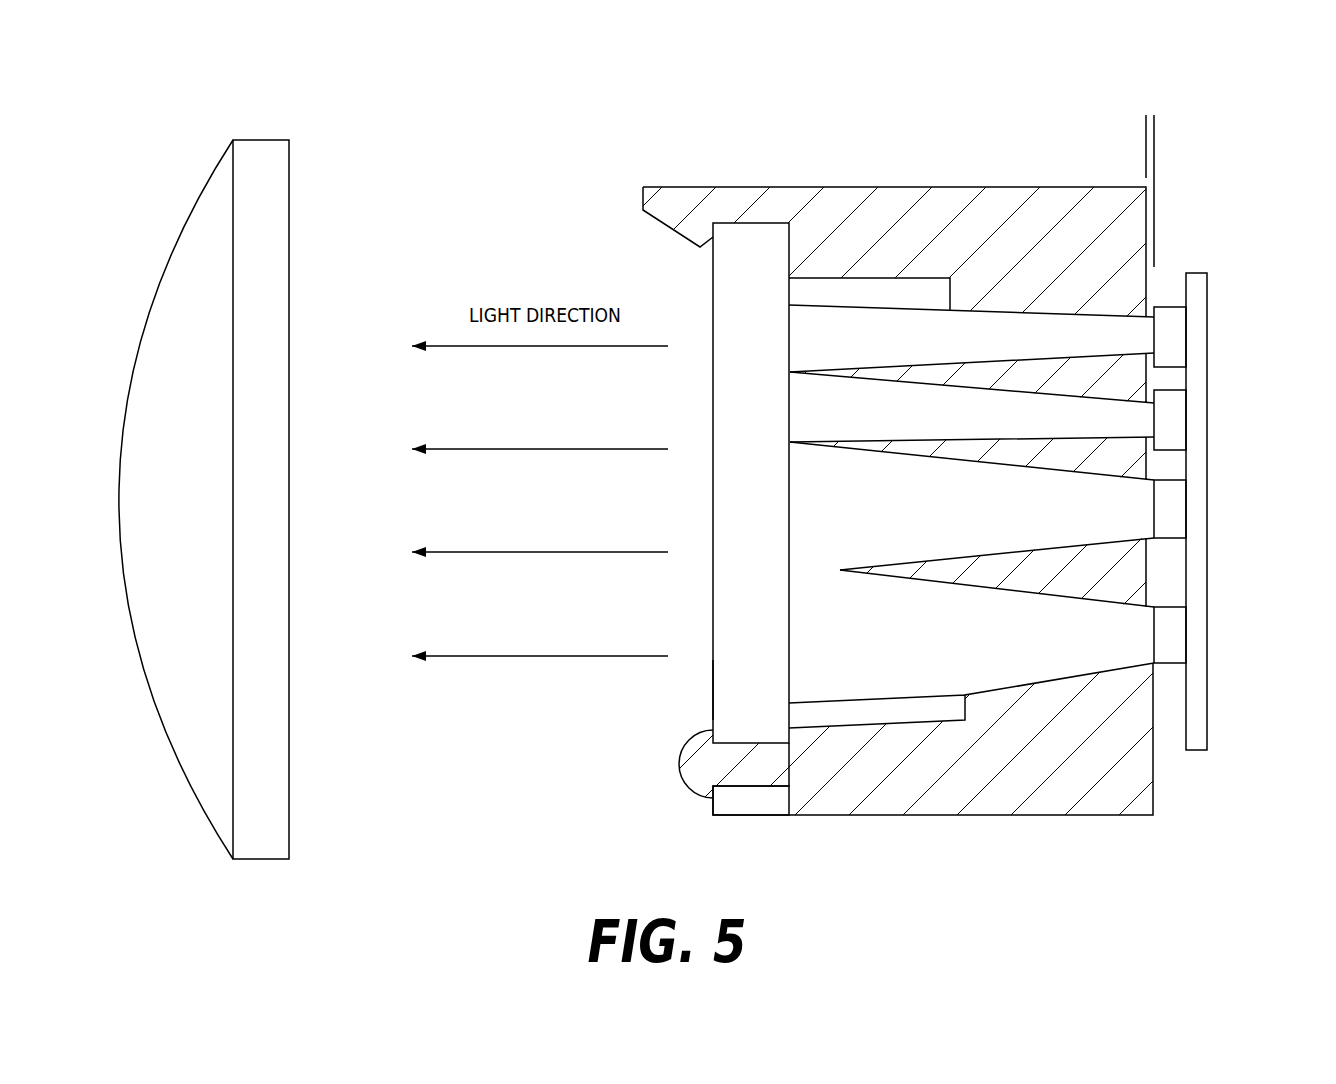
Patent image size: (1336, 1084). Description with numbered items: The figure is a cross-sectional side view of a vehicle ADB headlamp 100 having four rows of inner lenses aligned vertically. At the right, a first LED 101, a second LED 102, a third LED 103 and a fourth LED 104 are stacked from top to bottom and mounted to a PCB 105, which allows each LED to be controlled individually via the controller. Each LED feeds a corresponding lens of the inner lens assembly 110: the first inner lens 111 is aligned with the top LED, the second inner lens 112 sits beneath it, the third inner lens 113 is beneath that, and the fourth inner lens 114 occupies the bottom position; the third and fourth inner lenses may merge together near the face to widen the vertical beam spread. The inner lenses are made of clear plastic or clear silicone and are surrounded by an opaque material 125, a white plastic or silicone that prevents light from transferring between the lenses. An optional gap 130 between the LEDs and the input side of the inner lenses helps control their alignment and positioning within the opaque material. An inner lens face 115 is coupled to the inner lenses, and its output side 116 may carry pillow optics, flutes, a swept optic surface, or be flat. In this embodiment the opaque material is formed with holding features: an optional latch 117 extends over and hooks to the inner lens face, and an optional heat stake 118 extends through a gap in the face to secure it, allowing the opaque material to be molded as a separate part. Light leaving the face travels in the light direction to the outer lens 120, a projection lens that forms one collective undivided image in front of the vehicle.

The vehicle ADB headlamp 100 is at (204, 491).
The first LED 101 is at (1172, 337).
The second LED 102 is at (1172, 423).
The third LED 103 is at (1172, 507).
The fourth LED 104 is at (1172, 632).
The PCB 105 is at (1197, 733).
The inner lens assembly 110 is at (872, 510).
The first inner lens 111 is at (850, 330).
The second inner lens 112 is at (987, 405).
The third inner lens 113 is at (962, 507).
The fourth inner lens 114 is at (868, 663).
The inner lens face 115 is at (725, 281).
The output side 116 is at (676, 689).
The latch 117 is at (648, 196).
The heat stake 118 is at (693, 779).
The outer lens 120 is at (263, 837).
The opaque material 125 is at (1123, 742).
The gap 130 is at (1149, 103).